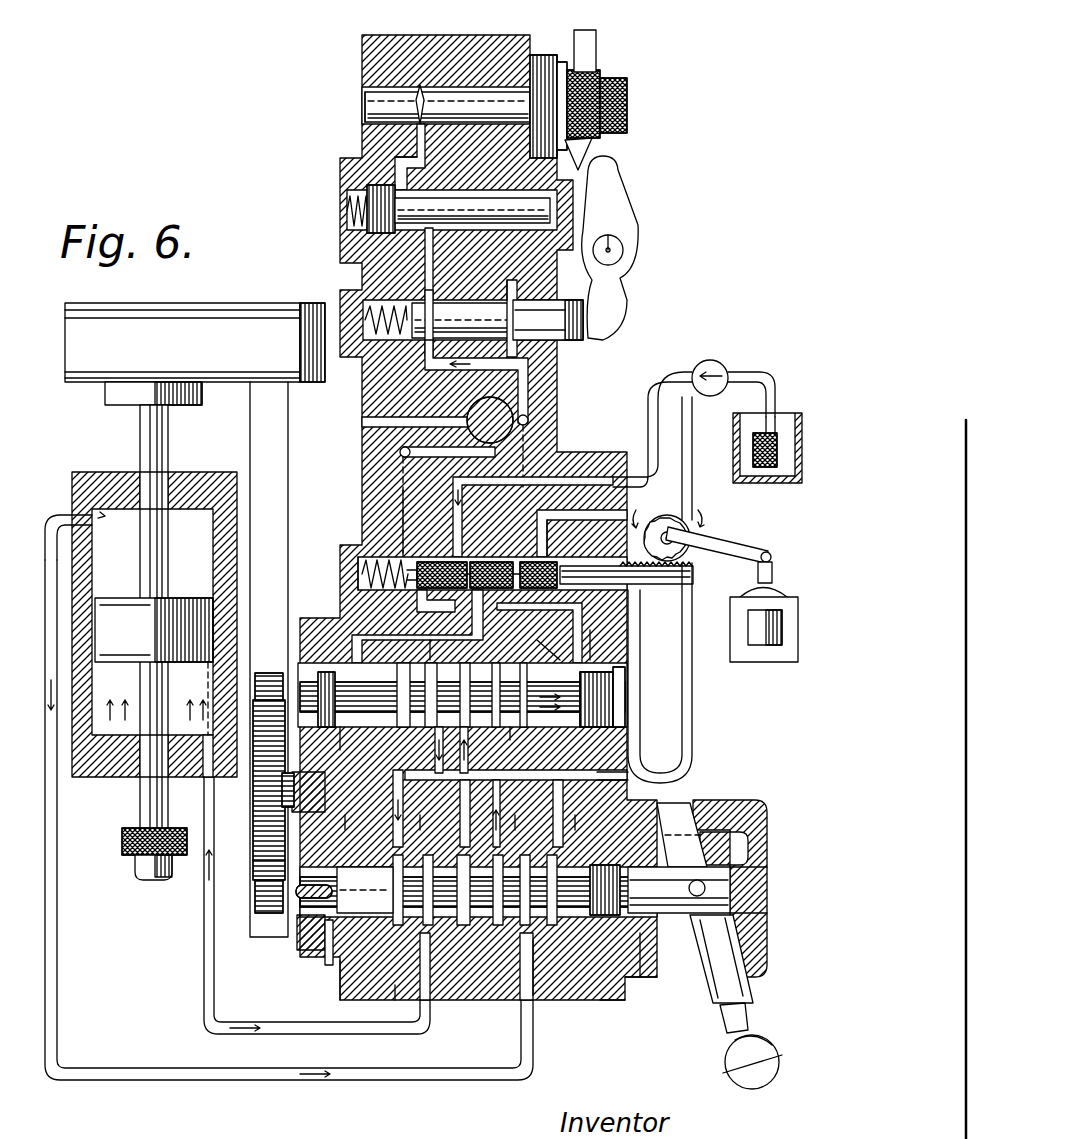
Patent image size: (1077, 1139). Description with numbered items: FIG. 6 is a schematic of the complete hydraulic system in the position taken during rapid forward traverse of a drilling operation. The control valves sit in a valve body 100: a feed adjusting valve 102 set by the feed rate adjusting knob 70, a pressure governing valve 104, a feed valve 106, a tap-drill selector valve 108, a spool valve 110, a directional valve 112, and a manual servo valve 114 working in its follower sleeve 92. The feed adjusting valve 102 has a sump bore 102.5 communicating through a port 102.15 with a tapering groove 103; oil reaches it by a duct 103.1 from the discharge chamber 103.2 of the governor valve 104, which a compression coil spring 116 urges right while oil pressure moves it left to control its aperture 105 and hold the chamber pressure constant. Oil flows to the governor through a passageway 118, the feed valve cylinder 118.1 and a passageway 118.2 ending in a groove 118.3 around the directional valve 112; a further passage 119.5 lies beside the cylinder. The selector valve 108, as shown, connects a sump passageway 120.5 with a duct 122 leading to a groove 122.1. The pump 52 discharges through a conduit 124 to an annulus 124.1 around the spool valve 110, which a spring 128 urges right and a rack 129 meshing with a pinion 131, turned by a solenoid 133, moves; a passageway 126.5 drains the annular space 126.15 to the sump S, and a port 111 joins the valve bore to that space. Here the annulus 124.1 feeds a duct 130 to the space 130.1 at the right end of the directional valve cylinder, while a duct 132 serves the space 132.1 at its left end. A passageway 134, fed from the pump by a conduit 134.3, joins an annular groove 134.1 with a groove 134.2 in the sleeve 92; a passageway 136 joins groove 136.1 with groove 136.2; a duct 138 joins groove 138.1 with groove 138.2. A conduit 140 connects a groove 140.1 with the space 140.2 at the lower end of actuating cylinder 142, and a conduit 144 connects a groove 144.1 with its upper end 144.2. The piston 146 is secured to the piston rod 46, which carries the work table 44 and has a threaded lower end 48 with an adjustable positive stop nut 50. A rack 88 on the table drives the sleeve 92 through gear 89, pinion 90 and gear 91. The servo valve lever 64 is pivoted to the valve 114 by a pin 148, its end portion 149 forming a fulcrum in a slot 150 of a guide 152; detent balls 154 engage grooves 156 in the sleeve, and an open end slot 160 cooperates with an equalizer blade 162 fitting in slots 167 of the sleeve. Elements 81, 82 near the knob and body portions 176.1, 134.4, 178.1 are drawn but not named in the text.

The valve body 100 is at (362, 64).
The feed adjusting valve 102 is at (370, 123).
The sump bore 102.5 is at (367, 100).
The port 102.15 is at (421, 90).
The tapering groove 103 is at (445, 118).
The duct 103.1 is at (428, 163).
The discharge chamber 103.2 is at (420, 178).
The feed rate adjusting valve knob 70 is at (612, 74).
The lever 81 is at (592, 50).
The lever 82 is at (636, 222).
The pressure governing valve 104 is at (345, 190).
The compression coil spring 116 is at (352, 206).
The aperture 105 is at (410, 190).
The passageway 118 is at (433, 266).
The feed valve cylinder 118.1 is at (440, 303).
The collar 119.5 is at (535, 280).
The feed valve 106 is at (568, 340).
The passageway 118.2 is at (530, 420).
The groove 118.3 is at (560, 648).
The sump passageway 120.5 is at (364, 422).
The tap-drill selector valve 108 is at (520, 405).
The duct 122 is at (405, 452).
The conduit 124 is at (648, 440).
The annulus 124.1 is at (436, 523).
The sump passageway 126.5 is at (560, 512).
The spool valve 110 is at (577, 538).
The annular space 126.15 is at (492, 557).
The duct 132 is at (347, 665).
The compression coil spring 128 is at (358, 565).
The port 111 is at (562, 573).
The rack 129 is at (693, 575).
The space 132.1 is at (345, 668).
The duct 130 is at (617, 642).
The groove 122.1 is at (448, 656).
The annular groove 134.1 is at (455, 710).
The space 130.1 is at (615, 702).
The directional valve 112 is at (622, 665).
The passageway 136 is at (500, 762).
The groove 136.1 is at (520, 725).
The annular groove 138.1 is at (379, 746).
The duct 138 is at (386, 778).
The passageway 134 is at (458, 805).
The passage 176.1 is at (530, 813).
The block 134.4 is at (592, 813).
The annular groove 138.2 is at (370, 829).
The annular groove 134.2 is at (442, 829).
The groove 136.2 is at (535, 829).
The block 178.1 is at (595, 829).
The groove 140.1 is at (478, 927).
The groove 144.1 is at (564, 967).
The equalizer blade 162 is at (300, 950).
The gear 91 is at (296, 960).
The slots 167 is at (330, 940).
The open end slot 160 is at (355, 1000).
The servo valve sleeve 92 is at (398, 1000).
The manual servo valve 114 is at (655, 950).
The spring-pressed detent balls 154 is at (642, 978).
The grooves 156 is at (628, 1000).
The pump 52 is at (720, 368).
The sump S is at (735, 438).
The conduit 134.3 is at (693, 762).
The pinion 131 is at (690, 530).
The solenoid 133 is at (770, 582).
The slot 150 is at (725, 803).
The guide 152 is at (765, 862).
The end portion 149 is at (680, 805).
The pin 148 is at (705, 887).
The manual servo valve lever 64 is at (770, 1040).
The work table 44 is at (250, 330).
The actuating cylinder 142 is at (280, 535).
The space 140.2 is at (113, 735).
The piston rod 46 is at (146, 418).
The piston 146 is at (210, 722).
The lower end 48 is at (147, 810).
The adjustable positive stop nut 50 is at (135, 878).
The upper end 144.2 is at (103, 512).
The conduit 144 is at (140, 1083).
The conduit 140 is at (206, 988).
The rack 88 is at (258, 913).
The gear 89 is at (258, 857).
The pinion 90 is at (300, 785).